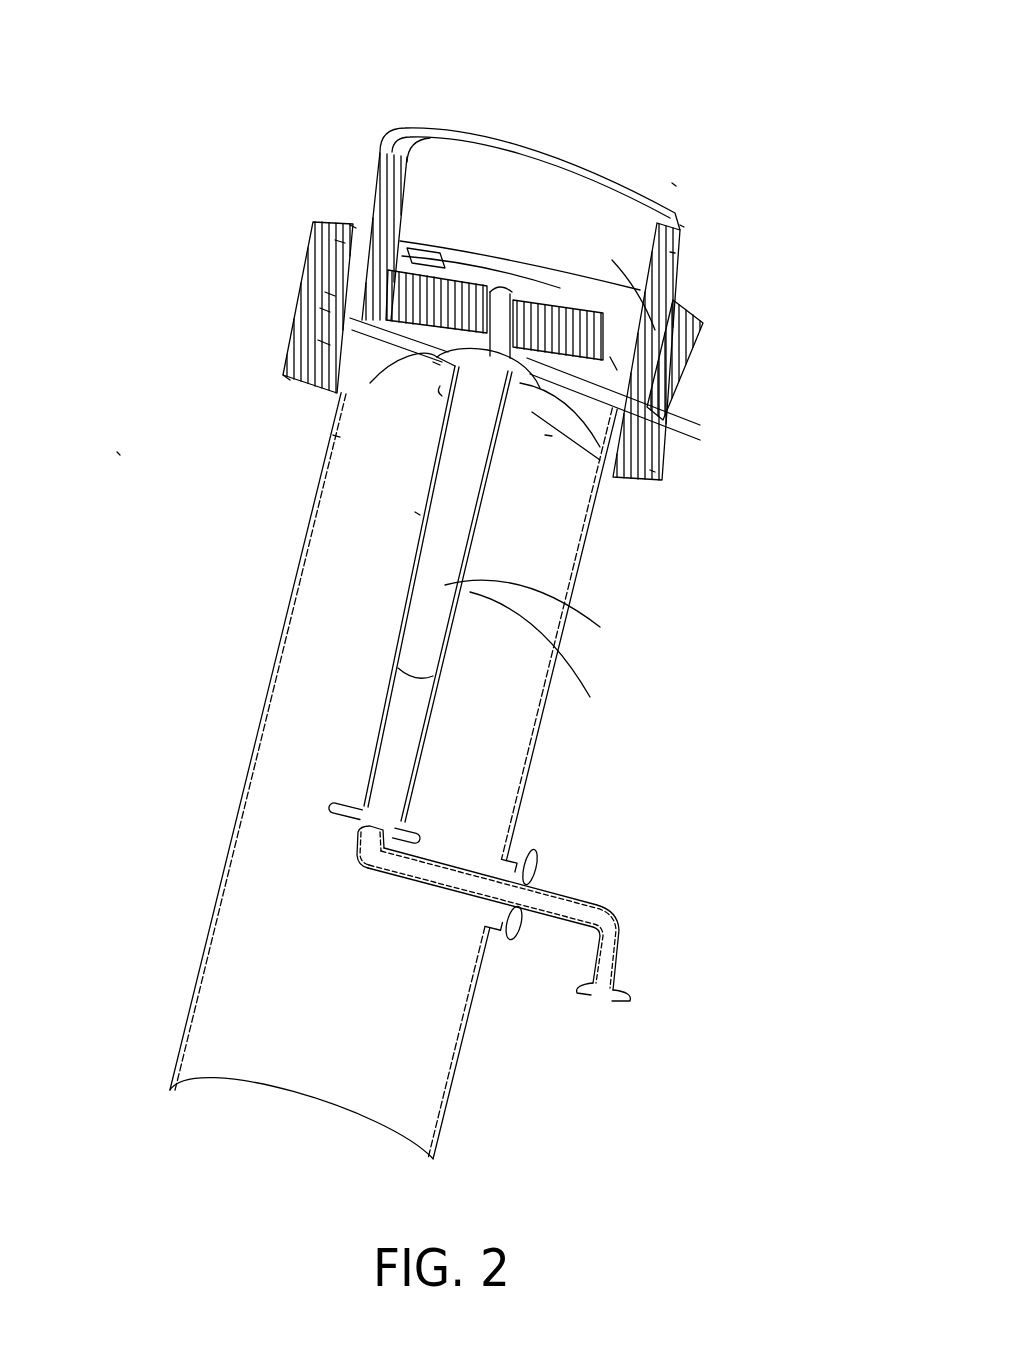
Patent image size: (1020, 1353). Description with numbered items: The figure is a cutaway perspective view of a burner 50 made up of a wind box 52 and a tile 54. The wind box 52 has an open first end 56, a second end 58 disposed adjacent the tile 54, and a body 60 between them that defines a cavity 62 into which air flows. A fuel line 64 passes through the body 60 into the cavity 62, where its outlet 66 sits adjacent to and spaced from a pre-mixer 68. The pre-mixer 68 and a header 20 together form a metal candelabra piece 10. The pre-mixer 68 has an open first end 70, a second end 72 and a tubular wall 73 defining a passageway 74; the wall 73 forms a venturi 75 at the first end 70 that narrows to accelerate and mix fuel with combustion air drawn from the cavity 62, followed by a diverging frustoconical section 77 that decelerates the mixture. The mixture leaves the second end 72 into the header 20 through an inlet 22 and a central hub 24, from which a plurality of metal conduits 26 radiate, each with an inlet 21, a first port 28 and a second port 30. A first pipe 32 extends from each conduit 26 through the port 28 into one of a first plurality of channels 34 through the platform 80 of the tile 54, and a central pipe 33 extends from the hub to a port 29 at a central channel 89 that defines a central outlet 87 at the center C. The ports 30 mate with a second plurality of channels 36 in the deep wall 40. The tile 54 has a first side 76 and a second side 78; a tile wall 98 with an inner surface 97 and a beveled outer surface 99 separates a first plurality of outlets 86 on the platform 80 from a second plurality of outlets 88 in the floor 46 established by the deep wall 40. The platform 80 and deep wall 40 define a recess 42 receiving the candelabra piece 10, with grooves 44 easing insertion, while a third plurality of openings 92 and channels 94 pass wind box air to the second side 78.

The candelabra piece 10 is at (410, 515).
The header 20 is at (345, 410).
The inlet 21 is at (433, 362).
The inlet 22 is at (478, 537).
The central hub 24 is at (650, 470).
The conduits 26 is at (368, 385).
The first port 28 is at (313, 243).
The port 29 is at (543, 293).
The second port 30 is at (307, 302).
The first pipe 32 is at (310, 262).
The central pipe 33 is at (487, 275).
The first plurality of channels 34 is at (340, 228).
The second plurality of channels 36 is at (388, 300).
The deep wall 40 is at (318, 345).
The recess 42 is at (546, 437).
The grooves 44 is at (283, 378).
The floor 46 is at (352, 205).
The burner 50 is at (112, 455).
The wind box 52 is at (220, 876).
The tile 54 is at (283, 380).
The first end 56 is at (313, 1098).
The second end 58 is at (333, 435).
The body 60 is at (212, 916).
The cavity 62 is at (268, 970).
The fuel line 64 is at (622, 904).
The outlet 66 is at (410, 830).
The pre-mixer 68 is at (440, 497).
The first end 70 is at (360, 824).
The second end 72 is at (428, 468).
The tubular wall 73 is at (531, 620).
The passageway 74 is at (537, 660).
The venturi 75 is at (335, 808).
The first side 76 is at (426, 396).
The diverging frustoconical section 77 is at (432, 605).
The second side 78 is at (465, 265).
The platform 80 is at (620, 320).
The first plurality of outlets 86 is at (407, 172).
The central outlet 87 is at (530, 300).
The second plurality of outlets 88 is at (350, 225).
The central channel 89 is at (545, 300).
The third plurality of openings 92 is at (426, 258).
The channels 94 is at (605, 310).
The inner surface 97 is at (400, 235).
The tile wall 98 is at (570, 300).
The outer surface 99 is at (407, 160).
The center C is at (502, 295).